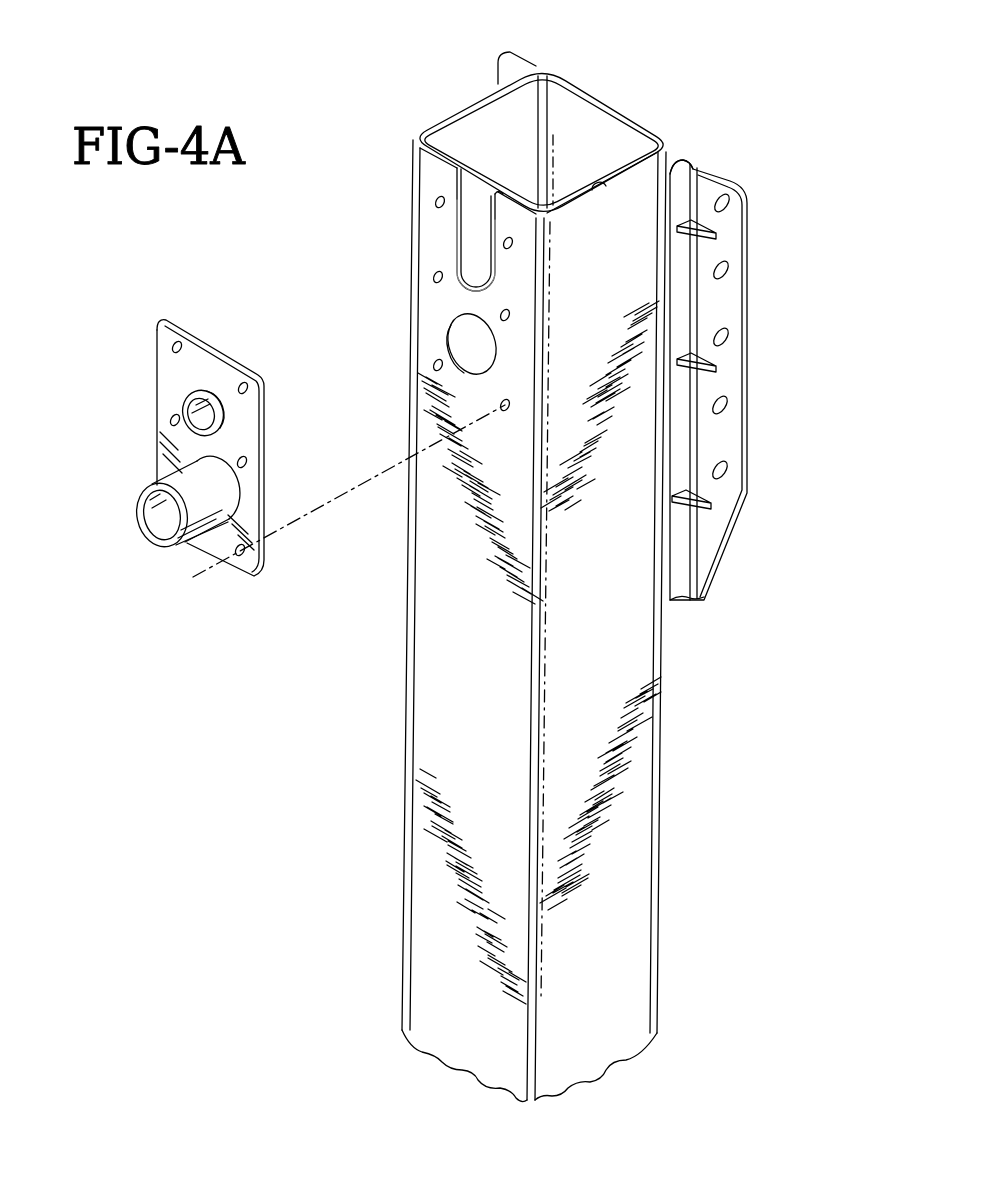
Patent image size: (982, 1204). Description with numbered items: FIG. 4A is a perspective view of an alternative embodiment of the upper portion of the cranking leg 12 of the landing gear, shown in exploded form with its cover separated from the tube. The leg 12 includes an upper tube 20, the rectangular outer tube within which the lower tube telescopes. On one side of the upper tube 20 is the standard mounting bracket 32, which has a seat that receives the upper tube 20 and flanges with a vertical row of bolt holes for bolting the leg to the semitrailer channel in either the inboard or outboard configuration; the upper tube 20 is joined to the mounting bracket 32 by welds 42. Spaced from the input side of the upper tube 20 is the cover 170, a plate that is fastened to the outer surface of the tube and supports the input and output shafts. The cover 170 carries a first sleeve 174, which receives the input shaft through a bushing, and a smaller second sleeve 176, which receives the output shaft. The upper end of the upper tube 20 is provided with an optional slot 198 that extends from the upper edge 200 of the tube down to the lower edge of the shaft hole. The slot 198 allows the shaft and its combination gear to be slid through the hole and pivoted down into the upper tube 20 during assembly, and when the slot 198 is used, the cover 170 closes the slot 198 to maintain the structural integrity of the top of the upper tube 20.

The cranking leg 12 is at (491, 589).
The upper tube 20 is at (435, 676).
The mounting bracket 32 is at (727, 300).
The weld 42 is at (672, 186).
The cover 170 is at (281, 448).
The first sleeve 174 is at (175, 480).
The second sleeve 176 is at (197, 392).
The slot 198 is at (457, 243).
The upper edge 200 is at (459, 109).